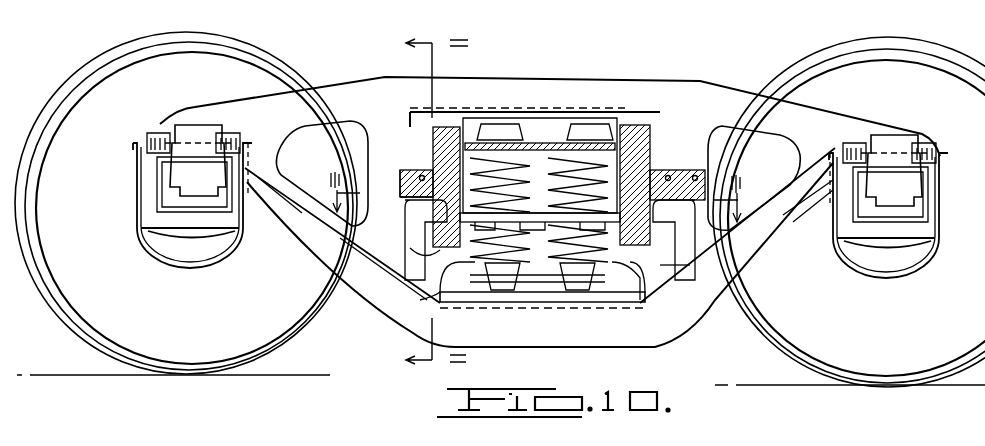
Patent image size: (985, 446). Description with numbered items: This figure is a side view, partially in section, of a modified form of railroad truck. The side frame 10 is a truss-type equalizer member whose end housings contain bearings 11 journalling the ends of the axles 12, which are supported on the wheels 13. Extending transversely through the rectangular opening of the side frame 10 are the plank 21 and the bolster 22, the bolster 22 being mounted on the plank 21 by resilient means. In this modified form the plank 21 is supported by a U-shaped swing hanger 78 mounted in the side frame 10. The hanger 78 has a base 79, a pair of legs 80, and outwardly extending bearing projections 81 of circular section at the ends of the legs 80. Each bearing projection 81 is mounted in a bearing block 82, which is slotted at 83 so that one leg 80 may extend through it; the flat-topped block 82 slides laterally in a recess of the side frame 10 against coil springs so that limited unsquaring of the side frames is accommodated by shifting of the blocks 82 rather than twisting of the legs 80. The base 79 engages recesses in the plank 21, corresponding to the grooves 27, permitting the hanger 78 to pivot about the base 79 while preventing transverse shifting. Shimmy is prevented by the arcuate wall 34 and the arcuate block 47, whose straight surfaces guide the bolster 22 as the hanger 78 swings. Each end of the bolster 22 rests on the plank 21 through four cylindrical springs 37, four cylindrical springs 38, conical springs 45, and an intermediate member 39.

The side frame 10 is at (712, 81).
The bearings 11 is at (412, 200).
The axles 12 is at (538, 175).
The wheels 13 is at (305, 359).
The plank 21 is at (558, 290).
The bolster 22 is at (531, 150).
The grooves 27 is at (418, 310).
The flange or vertical transverse portion 34 is at (430, 170).
The cylindrical springs 37 is at (481, 262).
The cylindrical springs 38 is at (560, 272).
The intermediate member 39 is at (505, 205).
The conical springs 45 is at (560, 173).
The arcuate blocks 47 is at (520, 170).
The swing hanger 78 is at (661, 276).
The base 79 is at (628, 296).
The legs 80 is at (427, 272).
The bearing projections 81 is at (405, 178).
The bearing block 82 is at (420, 265).
The slot 83 is at (430, 153).